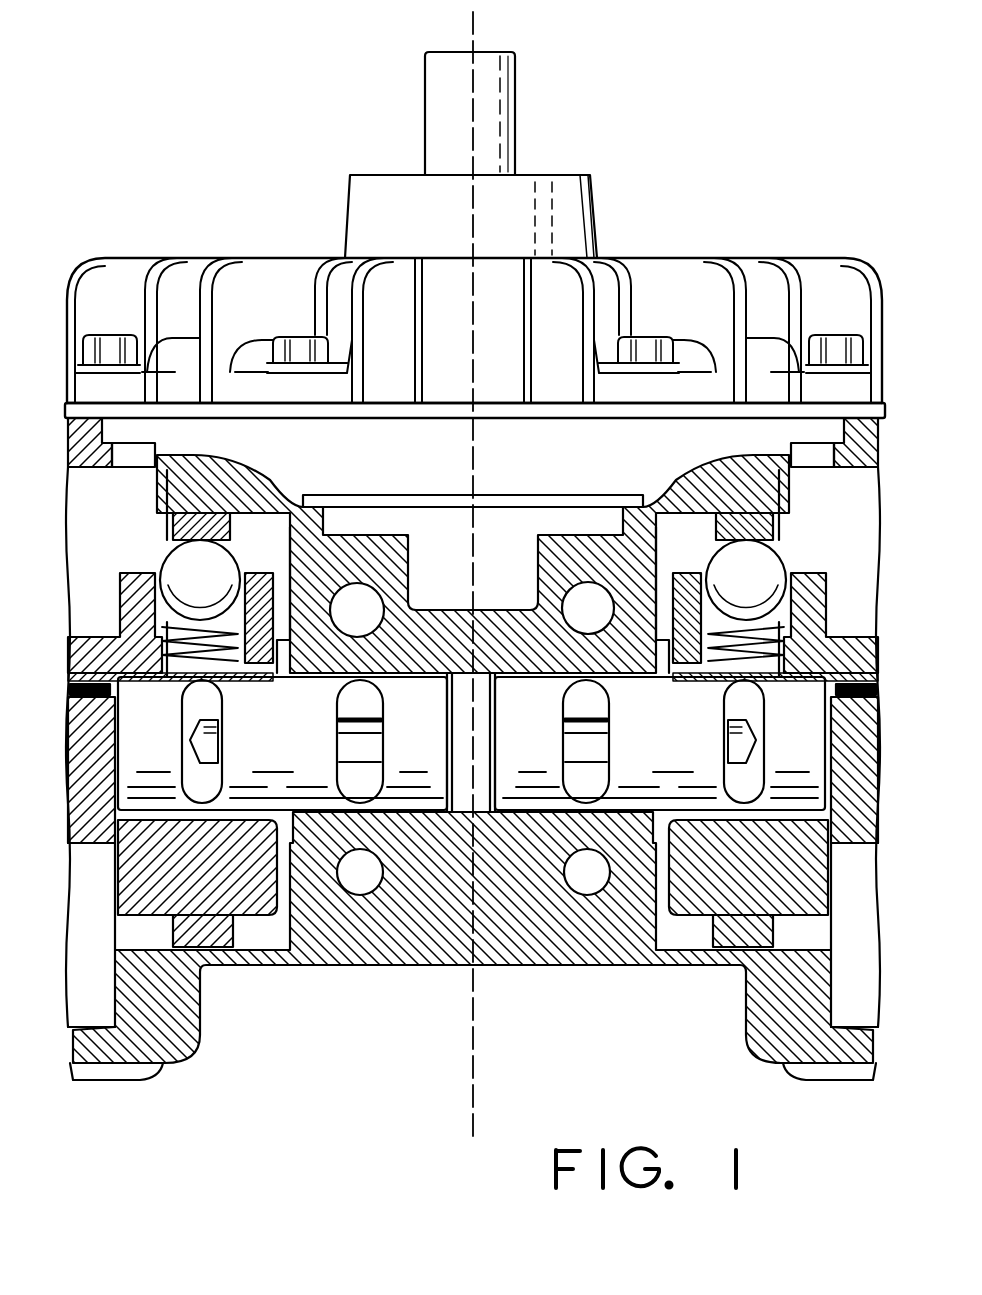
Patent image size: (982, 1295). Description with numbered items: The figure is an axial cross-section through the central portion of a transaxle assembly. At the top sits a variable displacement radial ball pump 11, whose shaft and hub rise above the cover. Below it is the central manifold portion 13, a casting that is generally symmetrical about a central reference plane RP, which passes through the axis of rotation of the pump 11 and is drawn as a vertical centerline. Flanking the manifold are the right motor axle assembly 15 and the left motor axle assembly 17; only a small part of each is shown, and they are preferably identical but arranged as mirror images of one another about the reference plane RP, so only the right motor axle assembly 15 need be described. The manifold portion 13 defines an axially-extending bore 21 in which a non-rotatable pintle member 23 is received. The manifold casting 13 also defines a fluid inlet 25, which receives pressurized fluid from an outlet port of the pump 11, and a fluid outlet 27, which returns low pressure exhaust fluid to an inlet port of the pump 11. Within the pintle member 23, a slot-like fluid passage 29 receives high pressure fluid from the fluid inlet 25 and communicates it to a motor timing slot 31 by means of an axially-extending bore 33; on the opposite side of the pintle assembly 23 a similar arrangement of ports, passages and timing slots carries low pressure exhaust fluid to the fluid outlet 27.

The variable displacement radial ball pump 11 is at (620, 160).
The central manifold portion 13 is at (505, 553).
The right motor axle assembly 15 is at (884, 559).
The left motor axle assembly 17 is at (60, 558).
The axially-extending bore 21 is at (545, 684).
The pintle member 23 is at (471, 743).
The fluid inlet 25 is at (588, 598).
The fluid outlet 27 is at (580, 890).
The slot-like fluid passage 29 is at (570, 788).
The motor timing slot 31 is at (747, 788).
The axially-extending bore 33 is at (590, 737).
The central reference plane RP is at (470, 28).